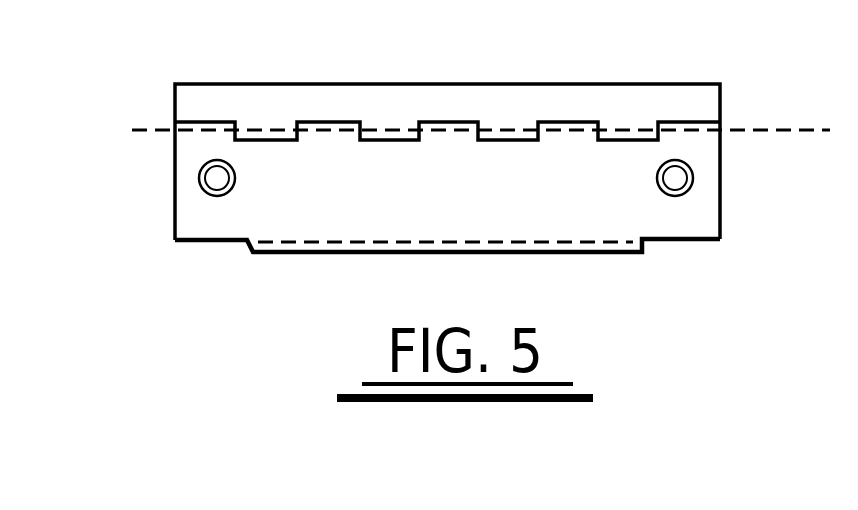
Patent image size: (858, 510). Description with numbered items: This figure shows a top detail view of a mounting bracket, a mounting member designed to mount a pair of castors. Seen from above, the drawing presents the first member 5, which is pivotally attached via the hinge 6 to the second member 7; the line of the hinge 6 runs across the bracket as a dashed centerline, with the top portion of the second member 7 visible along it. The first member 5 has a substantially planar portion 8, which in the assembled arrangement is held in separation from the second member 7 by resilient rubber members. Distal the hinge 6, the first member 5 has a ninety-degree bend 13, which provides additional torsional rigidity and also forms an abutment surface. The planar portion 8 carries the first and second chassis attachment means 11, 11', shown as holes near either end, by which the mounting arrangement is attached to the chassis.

The first member 5 is at (723, 162).
The hinge 6 is at (468, 127).
The second member 7 is at (447, 103).
The planar portion 8 is at (462, 190).
The first chassis attachment means 11 is at (692, 228).
The second chassis attachment means 11' is at (173, 223).
The bend 13 is at (375, 252).